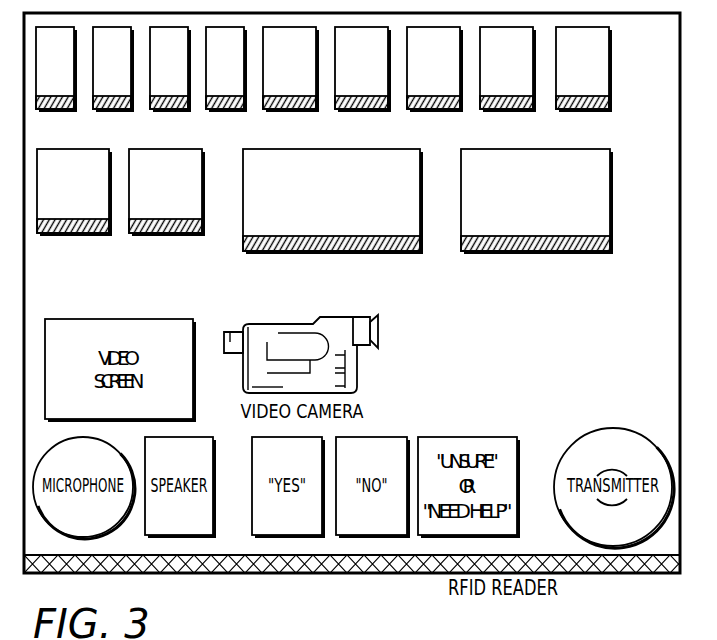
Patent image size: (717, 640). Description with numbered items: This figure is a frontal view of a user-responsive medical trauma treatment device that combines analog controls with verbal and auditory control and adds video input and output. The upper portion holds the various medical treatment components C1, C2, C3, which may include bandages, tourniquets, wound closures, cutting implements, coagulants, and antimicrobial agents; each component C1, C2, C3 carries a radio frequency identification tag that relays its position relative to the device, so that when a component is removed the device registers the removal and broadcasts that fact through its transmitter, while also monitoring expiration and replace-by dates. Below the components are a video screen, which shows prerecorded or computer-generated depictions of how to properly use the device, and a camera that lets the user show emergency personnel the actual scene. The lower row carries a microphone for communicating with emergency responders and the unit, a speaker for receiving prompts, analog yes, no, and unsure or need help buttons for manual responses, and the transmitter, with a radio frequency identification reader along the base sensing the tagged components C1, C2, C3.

The medical treatment component C1 is at (323, 83).
The medical treatment component C2 is at (120, 206).
The medical treatment component C3 is at (427, 213).